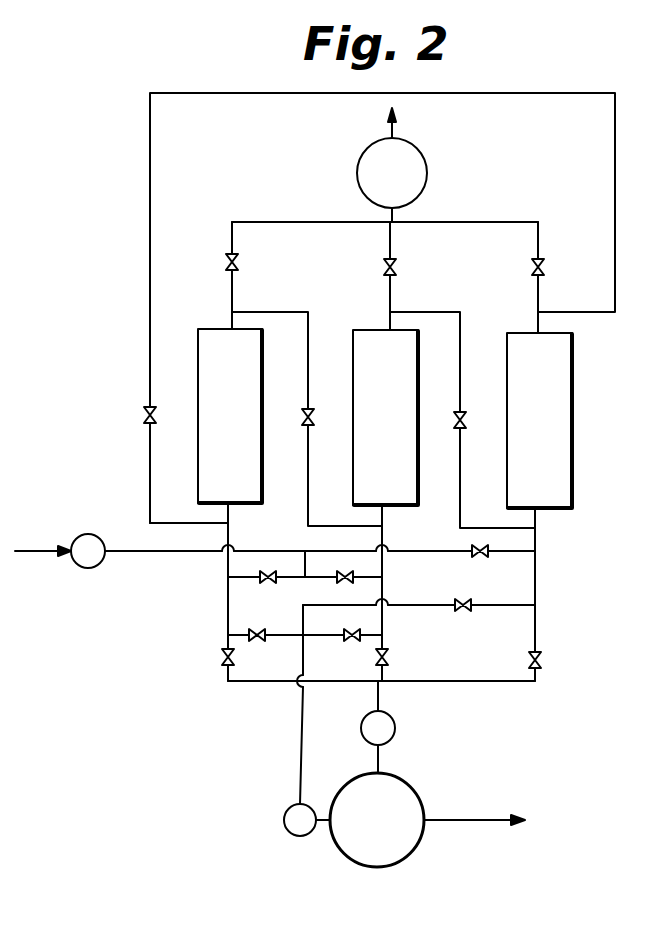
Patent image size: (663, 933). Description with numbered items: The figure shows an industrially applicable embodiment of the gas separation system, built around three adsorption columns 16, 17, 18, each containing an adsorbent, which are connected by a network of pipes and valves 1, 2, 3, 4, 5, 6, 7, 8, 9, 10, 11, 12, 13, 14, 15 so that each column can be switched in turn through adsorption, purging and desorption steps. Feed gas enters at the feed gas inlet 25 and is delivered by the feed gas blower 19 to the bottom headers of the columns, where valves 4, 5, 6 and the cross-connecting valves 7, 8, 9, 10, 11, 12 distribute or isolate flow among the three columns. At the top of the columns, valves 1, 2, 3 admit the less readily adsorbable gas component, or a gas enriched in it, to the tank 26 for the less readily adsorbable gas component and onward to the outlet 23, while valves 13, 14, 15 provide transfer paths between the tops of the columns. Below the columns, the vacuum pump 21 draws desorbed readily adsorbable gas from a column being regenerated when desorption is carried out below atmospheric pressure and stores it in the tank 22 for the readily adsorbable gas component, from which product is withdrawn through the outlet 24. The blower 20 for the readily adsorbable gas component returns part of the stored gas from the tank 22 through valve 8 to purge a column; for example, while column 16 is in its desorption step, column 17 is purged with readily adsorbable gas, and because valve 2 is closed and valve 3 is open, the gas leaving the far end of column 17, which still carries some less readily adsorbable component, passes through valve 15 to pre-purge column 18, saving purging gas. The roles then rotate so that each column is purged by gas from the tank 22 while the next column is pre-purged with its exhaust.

The valve 1 is at (240, 262).
The valve 2 is at (398, 267).
The valve 3 is at (546, 267).
The valve 4 is at (222, 660).
The valve 5 is at (374, 660).
The valve 6 is at (528, 661).
The valve 7 is at (262, 630).
The valve 8 is at (345, 633).
The valve 9 is at (460, 612).
The valve 10 is at (264, 584).
The valve 11 is at (340, 574).
The valve 12 is at (472, 559).
The valve 13 is at (144, 418).
The valve 14 is at (302, 422).
The valve 15 is at (454, 426).
The adsorption column 16 is at (198, 485).
The adsorption column 17 is at (353, 485).
The adsorption column 18 is at (572, 460).
The feed gas blower 19 is at (96, 566).
The blower for the readily adsorbable gas component 20 is at (290, 832).
The vacuum pump 21 is at (395, 735).
The tank for the readily adsorbable gas component 22 is at (418, 797).
The outlet for the less readily adsorbable gas component 23 is at (397, 124).
The outlet for the readily adsorbable gas component 24 is at (480, 824).
The feed gas inlet 25 is at (35, 551).
The tank for the less readily adsorbable gas component 26 is at (427, 178).